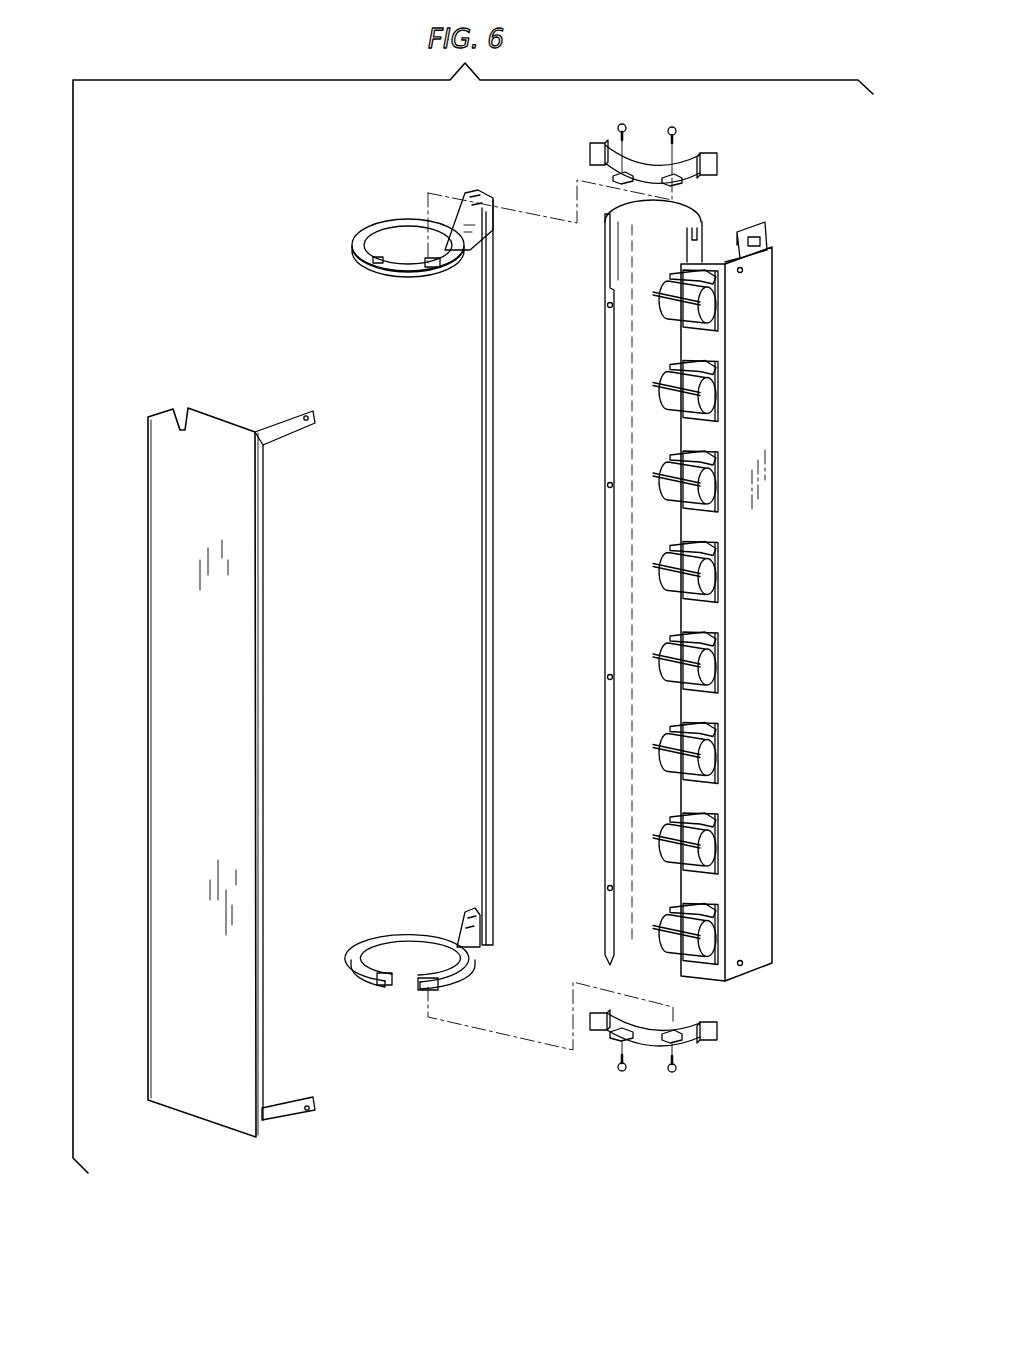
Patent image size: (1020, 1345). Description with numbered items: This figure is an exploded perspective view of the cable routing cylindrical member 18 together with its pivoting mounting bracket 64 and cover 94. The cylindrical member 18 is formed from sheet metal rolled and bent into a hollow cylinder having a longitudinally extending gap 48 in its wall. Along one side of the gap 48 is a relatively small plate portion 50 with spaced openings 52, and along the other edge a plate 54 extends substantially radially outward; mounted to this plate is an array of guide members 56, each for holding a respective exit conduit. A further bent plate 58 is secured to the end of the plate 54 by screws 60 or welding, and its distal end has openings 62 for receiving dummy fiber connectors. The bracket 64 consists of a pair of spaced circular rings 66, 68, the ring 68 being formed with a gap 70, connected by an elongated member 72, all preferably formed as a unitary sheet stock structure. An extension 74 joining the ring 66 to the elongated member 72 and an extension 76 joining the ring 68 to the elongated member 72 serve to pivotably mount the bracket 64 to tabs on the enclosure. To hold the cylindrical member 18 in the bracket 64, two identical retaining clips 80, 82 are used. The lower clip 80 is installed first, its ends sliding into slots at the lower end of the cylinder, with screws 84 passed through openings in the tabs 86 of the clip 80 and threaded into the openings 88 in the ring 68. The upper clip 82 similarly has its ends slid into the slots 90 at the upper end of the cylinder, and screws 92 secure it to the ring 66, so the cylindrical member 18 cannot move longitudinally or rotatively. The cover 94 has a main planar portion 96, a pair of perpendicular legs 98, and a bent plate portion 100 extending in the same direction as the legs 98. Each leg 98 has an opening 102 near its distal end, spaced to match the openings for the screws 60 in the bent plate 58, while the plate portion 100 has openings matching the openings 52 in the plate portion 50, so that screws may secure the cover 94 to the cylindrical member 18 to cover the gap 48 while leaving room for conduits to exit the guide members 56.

The cylindrical member 18 is at (855, 748).
The longitudinally extending gap 48 is at (640, 262).
The plate portion 50 is at (617, 397).
The spaced openings 52 is at (608, 308).
The plate 54 is at (755, 231).
The guide members 56 is at (708, 372).
The bent plate 58 is at (750, 655).
The screws 60 is at (743, 272).
The openings 62 is at (768, 243).
The bracket 64 is at (505, 947).
The ring 66 is at (462, 245).
The ring 68 is at (358, 965).
The gap 70 is at (385, 987).
The elongated member 72 is at (492, 500).
The extension 74 is at (470, 215).
The extension 76 is at (468, 940).
The lower retaining clip 80 is at (643, 1045).
The upper retaining clip 82 is at (605, 150).
The screws 84 is at (677, 1070).
The tabs 86 is at (672, 1032).
The openings 88 is at (427, 978).
The slots 90 is at (700, 235).
The screws 92 is at (676, 130).
The cover 94 is at (175, 960).
The main planar portion 96 is at (210, 1105).
The legs 98 is at (293, 424).
The bent plate portion 100 is at (178, 410).
The opening 102 is at (310, 428).